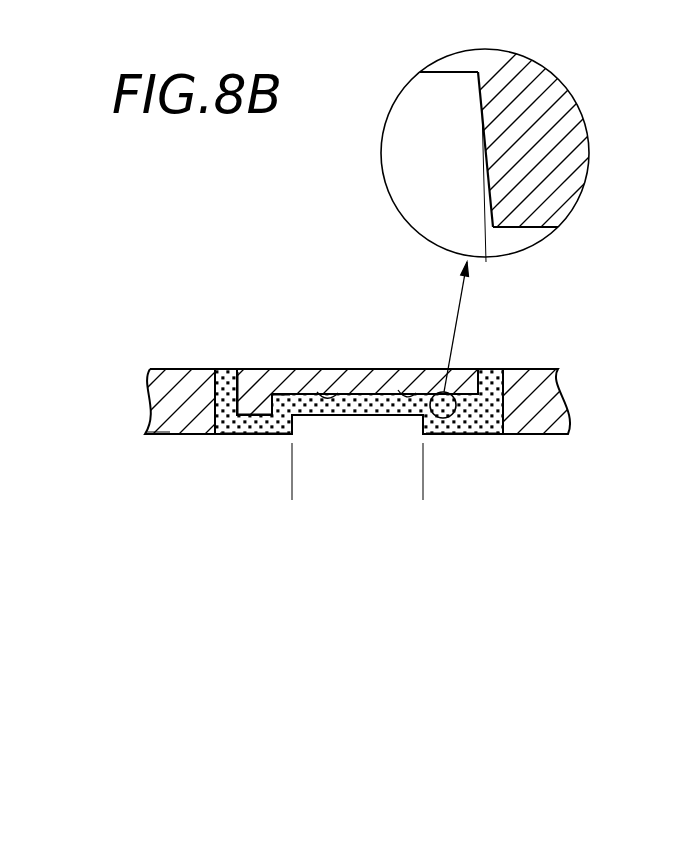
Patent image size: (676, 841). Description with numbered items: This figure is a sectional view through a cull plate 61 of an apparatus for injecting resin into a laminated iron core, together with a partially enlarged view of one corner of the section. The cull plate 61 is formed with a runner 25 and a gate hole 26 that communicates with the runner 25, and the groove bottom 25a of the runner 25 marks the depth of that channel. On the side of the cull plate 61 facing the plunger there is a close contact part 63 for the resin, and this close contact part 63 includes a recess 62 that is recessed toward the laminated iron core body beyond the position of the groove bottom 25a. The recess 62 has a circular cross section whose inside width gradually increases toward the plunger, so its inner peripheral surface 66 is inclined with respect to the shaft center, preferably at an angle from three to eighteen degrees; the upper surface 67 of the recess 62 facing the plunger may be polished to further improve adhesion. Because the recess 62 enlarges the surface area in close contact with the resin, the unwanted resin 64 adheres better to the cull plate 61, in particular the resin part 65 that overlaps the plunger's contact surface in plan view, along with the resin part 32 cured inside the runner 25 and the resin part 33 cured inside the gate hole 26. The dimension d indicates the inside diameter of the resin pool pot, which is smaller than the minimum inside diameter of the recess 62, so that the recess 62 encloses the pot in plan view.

The cull plate 61 is at (187, 412).
The close contact part 63 is at (380, 405).
The gate hole 26 is at (214, 372).
The groove bottom 25a is at (243, 413).
The runner 25 is at (273, 392).
The surface opposed to the plunger 67 is at (315, 393).
The resin part 65 is at (349, 394).
The recess 62 is at (404, 393).
The inner peripheral surface 66 is at (516, 230).
The resin part 33 is at (185, 417).
The resin part 32 is at (255, 425).
The unwanted resin 64 is at (450, 437).
The inside diameter of the resin pool pot d is at (423, 487).